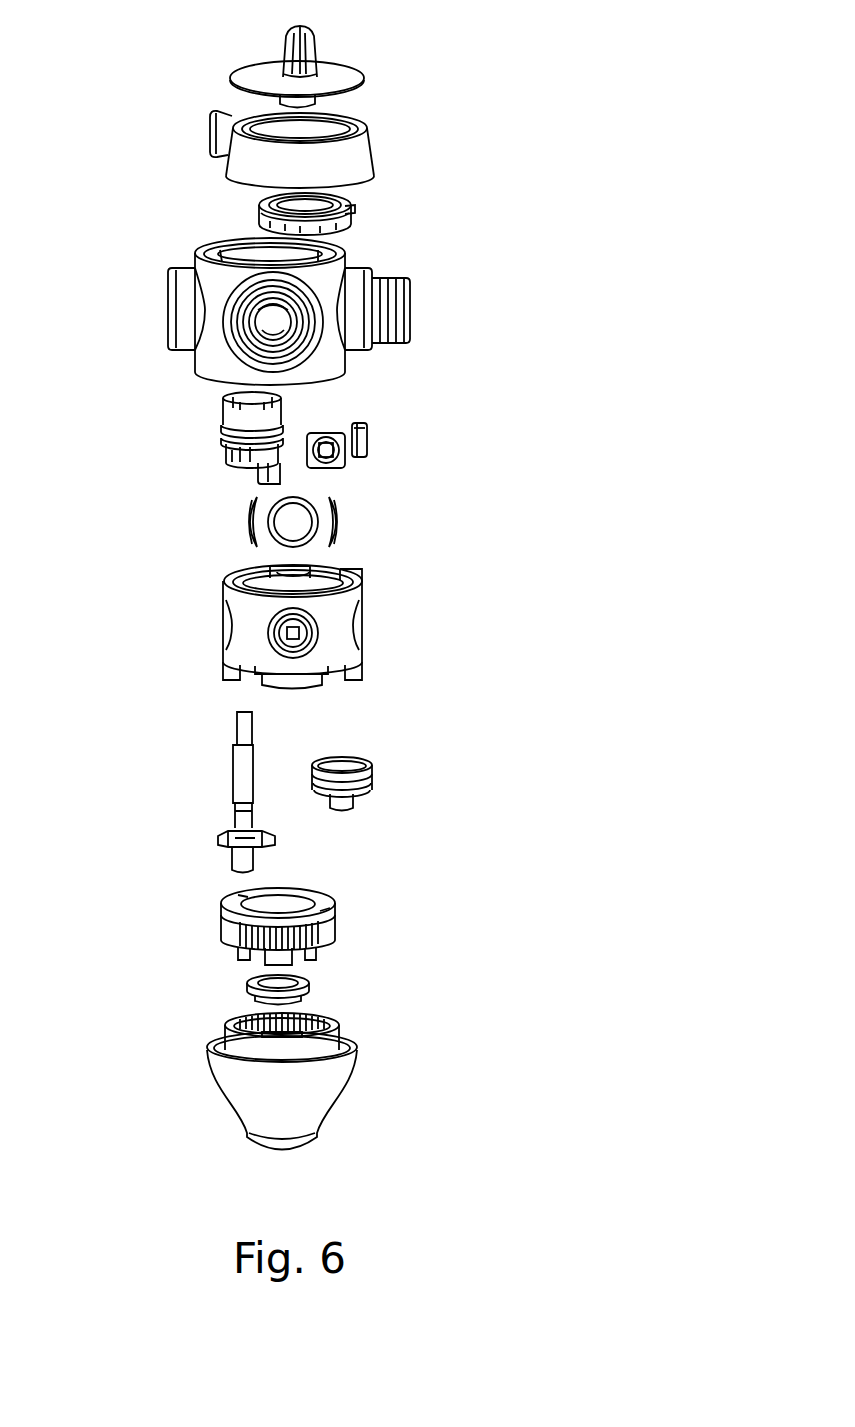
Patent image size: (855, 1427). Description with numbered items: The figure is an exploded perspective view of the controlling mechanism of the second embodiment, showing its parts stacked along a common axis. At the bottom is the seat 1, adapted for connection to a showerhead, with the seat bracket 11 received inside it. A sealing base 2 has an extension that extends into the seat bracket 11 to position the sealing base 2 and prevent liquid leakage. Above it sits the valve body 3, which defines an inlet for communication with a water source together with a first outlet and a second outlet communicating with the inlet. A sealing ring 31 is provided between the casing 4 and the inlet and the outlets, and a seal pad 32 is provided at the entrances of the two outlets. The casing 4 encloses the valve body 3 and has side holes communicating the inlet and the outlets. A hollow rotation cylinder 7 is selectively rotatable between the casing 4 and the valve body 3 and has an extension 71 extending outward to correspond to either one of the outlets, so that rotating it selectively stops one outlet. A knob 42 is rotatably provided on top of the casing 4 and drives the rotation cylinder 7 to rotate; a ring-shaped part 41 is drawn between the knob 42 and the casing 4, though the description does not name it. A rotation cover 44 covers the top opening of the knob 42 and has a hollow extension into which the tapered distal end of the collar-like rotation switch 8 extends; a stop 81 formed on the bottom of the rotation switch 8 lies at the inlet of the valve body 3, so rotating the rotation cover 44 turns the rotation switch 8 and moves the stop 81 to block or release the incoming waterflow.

The seat 1 is at (364, 1080).
The seat bracket 11 is at (335, 925).
The sealing base 2 is at (372, 783).
The valve body 3 is at (346, 615).
The sealing ring 31 is at (340, 517).
The seal pad 32 is at (367, 441).
The casing 4 is at (365, 309).
The lock nut 41 is at (355, 212).
The knob 42 is at (366, 152).
The rotation cover 44 is at (364, 82).
The rotation cylinder 7 is at (223, 412).
The extension 71 is at (262, 476).
The rotation switch 8 is at (233, 774).
The stop 81 is at (275, 840).